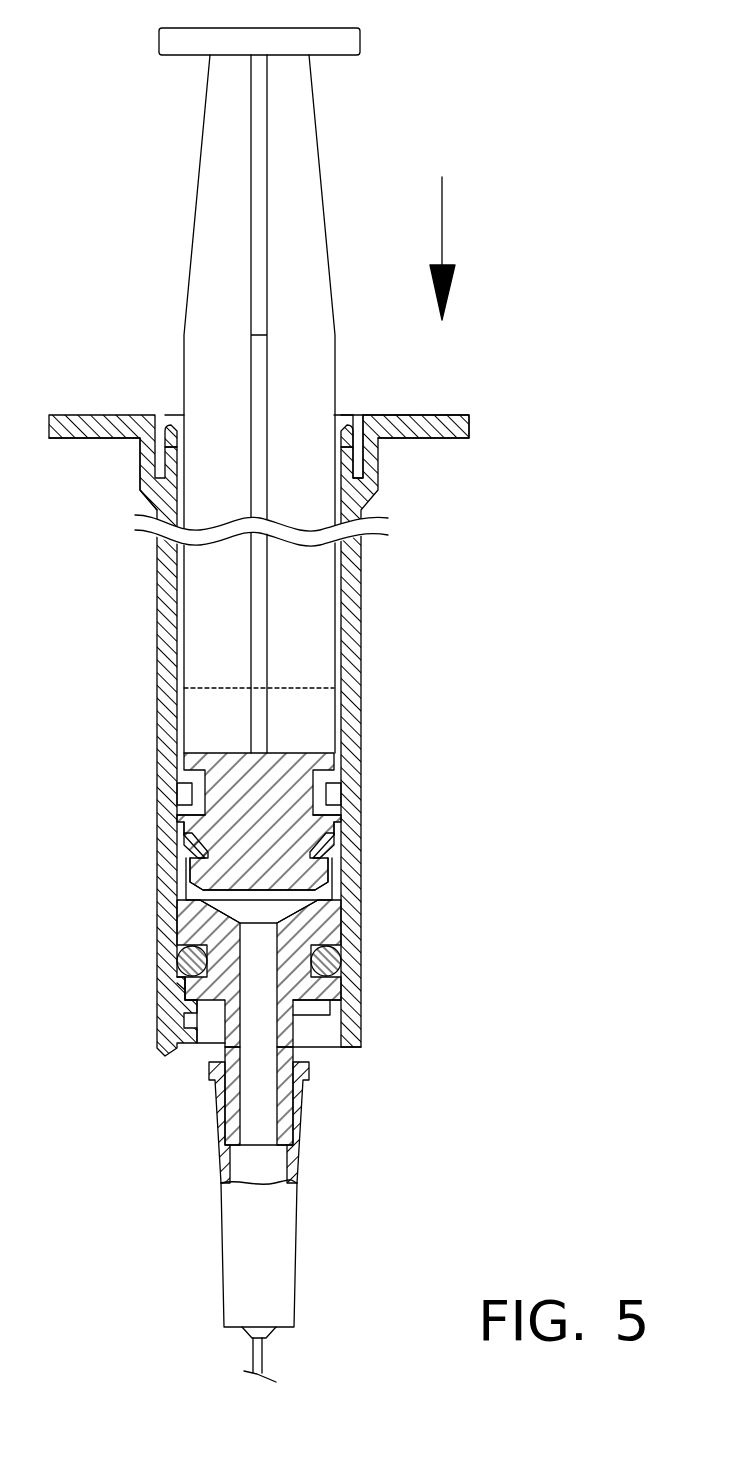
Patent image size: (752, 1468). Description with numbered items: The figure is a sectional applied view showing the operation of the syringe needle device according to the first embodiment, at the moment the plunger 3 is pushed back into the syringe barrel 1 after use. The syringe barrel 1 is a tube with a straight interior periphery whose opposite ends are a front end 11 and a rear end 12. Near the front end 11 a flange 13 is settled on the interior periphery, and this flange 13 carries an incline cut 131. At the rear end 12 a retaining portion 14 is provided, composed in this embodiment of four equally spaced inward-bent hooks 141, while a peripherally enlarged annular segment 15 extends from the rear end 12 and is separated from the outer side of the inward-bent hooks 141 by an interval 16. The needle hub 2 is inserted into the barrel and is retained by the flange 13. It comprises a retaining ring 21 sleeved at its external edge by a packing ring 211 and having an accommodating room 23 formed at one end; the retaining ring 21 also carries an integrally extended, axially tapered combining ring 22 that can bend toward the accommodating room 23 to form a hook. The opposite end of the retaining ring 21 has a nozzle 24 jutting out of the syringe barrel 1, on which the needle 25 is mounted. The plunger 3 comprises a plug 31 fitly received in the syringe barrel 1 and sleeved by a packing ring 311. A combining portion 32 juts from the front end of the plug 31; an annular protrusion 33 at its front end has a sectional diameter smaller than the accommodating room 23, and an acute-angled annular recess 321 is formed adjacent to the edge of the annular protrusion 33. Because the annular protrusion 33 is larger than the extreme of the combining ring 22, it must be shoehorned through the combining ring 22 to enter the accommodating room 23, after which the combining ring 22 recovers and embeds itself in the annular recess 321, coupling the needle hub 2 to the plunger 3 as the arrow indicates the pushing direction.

The syringe barrel 1 is at (372, 648).
The front end 11 is at (338, 1052).
The rear end 12 is at (352, 414).
The flange 13 is at (342, 1005).
The incline cut 131 is at (178, 987).
The retaining portion 14 is at (357, 465).
The inward-bent hooks 141 is at (338, 445).
The peripherally enlarged annular segment 15 is at (145, 462).
The interval 16 is at (162, 425).
The needle hub 2 is at (310, 1031).
The retaining ring 21 is at (350, 933).
The packing ring 211 is at (330, 960).
The combining ring 22 is at (335, 848).
The accommodating room 23 is at (345, 895).
The nozzle 24 is at (283, 1106).
The needle 25 is at (287, 1217).
The plunger 3 is at (184, 199).
The plug 31 is at (178, 768).
The packing ring 311 is at (178, 786).
The combining portion 32 is at (180, 830).
The annular recess 321 is at (182, 858).
The annular protrusion 33 is at (186, 880).